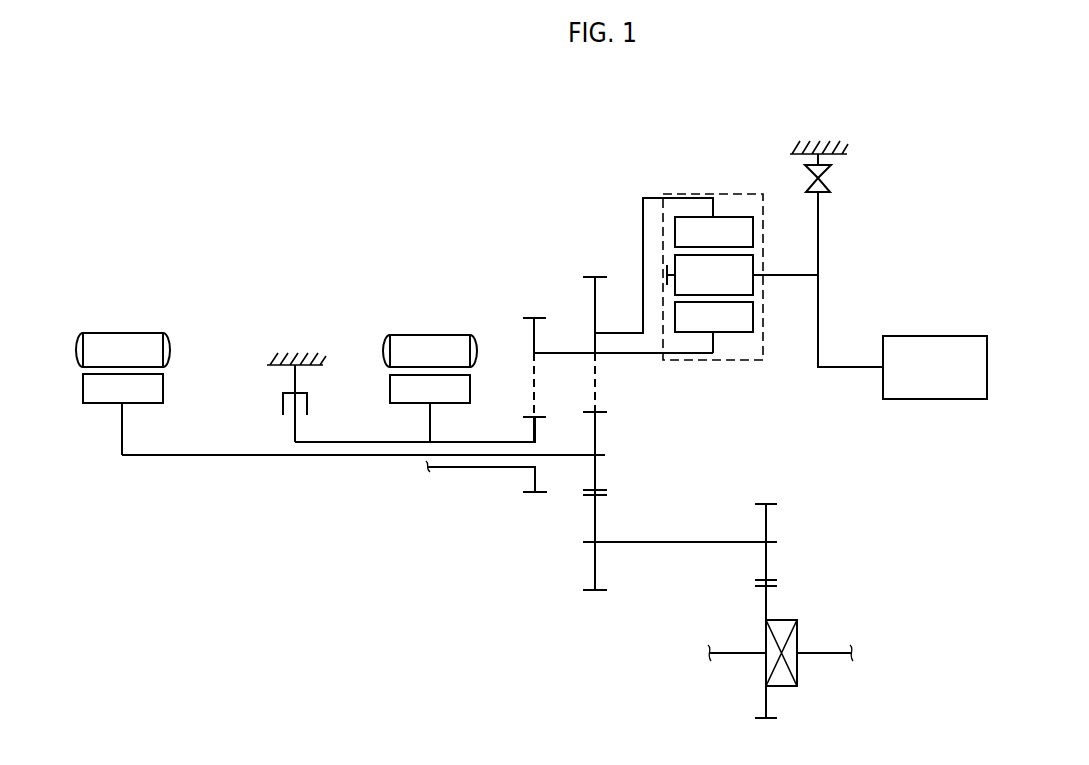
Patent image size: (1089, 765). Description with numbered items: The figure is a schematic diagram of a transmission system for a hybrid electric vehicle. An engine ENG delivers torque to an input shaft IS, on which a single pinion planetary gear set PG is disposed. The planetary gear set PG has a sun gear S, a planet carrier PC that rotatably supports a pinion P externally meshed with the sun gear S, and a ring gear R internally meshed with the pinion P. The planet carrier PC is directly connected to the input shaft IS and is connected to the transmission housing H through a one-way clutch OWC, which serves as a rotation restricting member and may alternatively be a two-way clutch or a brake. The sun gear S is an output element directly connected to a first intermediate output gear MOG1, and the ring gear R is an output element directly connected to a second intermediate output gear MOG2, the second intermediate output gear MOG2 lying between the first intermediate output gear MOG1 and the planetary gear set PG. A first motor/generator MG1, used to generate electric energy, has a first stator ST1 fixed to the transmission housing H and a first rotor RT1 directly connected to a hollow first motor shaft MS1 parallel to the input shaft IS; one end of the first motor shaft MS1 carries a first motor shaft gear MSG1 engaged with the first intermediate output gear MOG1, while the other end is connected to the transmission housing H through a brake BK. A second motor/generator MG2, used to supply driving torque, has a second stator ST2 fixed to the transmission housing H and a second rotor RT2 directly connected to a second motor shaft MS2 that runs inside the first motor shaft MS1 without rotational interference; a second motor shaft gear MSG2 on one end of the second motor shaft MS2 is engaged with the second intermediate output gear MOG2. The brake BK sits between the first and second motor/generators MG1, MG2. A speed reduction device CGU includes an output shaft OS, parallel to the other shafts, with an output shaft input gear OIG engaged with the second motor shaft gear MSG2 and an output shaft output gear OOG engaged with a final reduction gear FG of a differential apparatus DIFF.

The second motor/generator MG2 is at (112, 348).
The second stator ST2 is at (123, 350).
The second rotor RT2 is at (123, 414).
The transmission housing H is at (276, 353).
The brake BK is at (268, 410).
The first motor/generator MG1 is at (416, 341).
The first stator ST1 is at (430, 351).
The first rotor RT1 is at (430, 408).
The first motor shaft MS1 is at (487, 434).
The second motor shaft MS2 is at (337, 457).
The first intermediate output gear MOG1 is at (534, 337).
The second intermediate output gear MOG2 is at (595, 298).
The first motor shaft gear MSG1 is at (535, 433).
The second motor shaft gear MSG2 is at (597, 436).
The planetary gear set PG is at (713, 235).
The ring gear R is at (714, 232).
The pinion P is at (710, 275).
The sun gear S is at (714, 327).
The planet carrier PC is at (795, 275).
The one-way clutch OWC is at (849, 176).
The input shaft IS is at (840, 369).
The engine ENG is at (935, 367).
The output shaft input gear OIG is at (595, 518).
The speed reduction device CGU is at (568, 578).
The output shaft OS is at (673, 544).
The output shaft output gear OOG is at (766, 521).
The final reduction gear FG is at (766, 604).
The differential apparatus DIFF is at (797, 641).